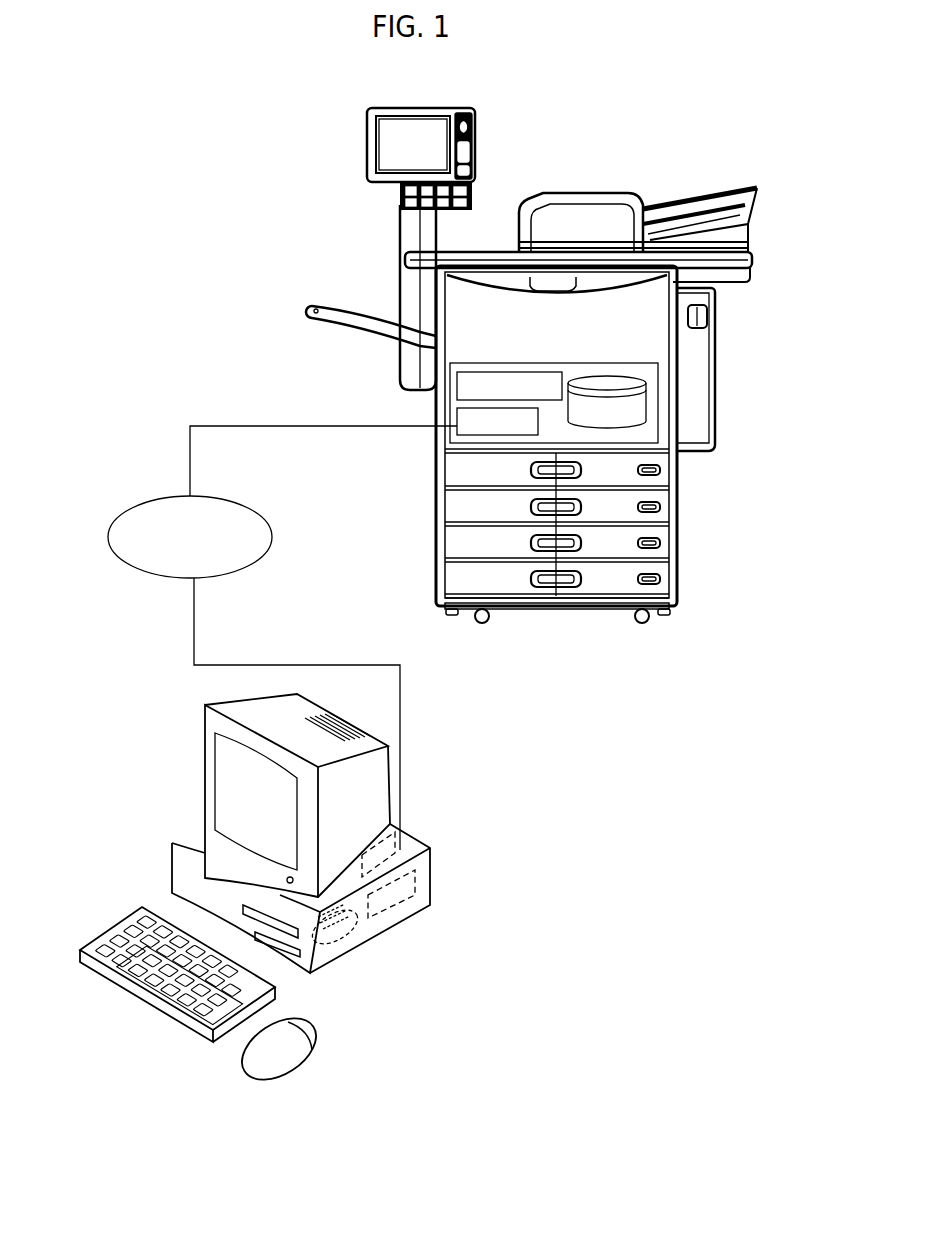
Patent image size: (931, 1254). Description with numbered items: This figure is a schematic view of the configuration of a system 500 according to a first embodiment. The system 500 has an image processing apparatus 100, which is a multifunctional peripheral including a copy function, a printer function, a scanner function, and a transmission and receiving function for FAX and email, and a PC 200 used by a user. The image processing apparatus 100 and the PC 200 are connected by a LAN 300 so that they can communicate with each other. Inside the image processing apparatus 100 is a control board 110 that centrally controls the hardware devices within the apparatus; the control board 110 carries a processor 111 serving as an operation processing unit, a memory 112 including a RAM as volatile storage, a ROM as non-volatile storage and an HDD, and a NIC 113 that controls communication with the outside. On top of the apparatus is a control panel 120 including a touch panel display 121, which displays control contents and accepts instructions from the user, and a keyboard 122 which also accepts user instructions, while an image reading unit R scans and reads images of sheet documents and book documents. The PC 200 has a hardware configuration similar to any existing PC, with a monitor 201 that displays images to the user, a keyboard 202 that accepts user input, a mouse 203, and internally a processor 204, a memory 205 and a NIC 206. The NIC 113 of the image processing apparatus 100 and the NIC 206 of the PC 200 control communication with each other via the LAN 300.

The system 500 is at (170, 122).
The image processing apparatus 100 is at (590, 150).
The control board 110 is at (660, 433).
The processor 111 is at (495, 375).
The memory 112 is at (607, 375).
The NIC 113 is at (508, 434).
The control panel 120 is at (455, 108).
The touch panel display 121 is at (385, 143).
The keyboard 122 is at (476, 147).
The image reading unit R is at (762, 188).
The LAN 300 is at (258, 507).
The PC 200 is at (118, 733).
The monitor 201 is at (205, 742).
The keyboard 202 is at (130, 922).
The mouse 203 is at (310, 1050).
The processor 204 is at (406, 898).
The memory 205 is at (350, 940).
The NIC 206 is at (402, 830).